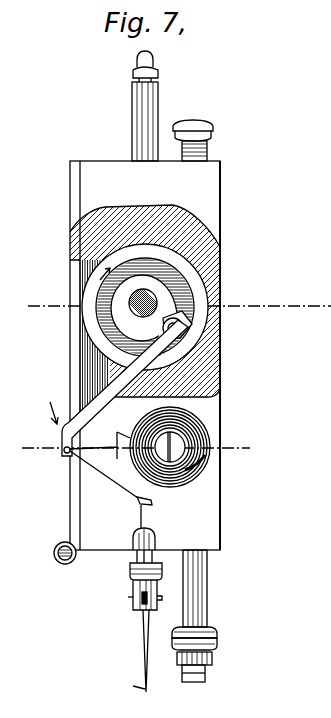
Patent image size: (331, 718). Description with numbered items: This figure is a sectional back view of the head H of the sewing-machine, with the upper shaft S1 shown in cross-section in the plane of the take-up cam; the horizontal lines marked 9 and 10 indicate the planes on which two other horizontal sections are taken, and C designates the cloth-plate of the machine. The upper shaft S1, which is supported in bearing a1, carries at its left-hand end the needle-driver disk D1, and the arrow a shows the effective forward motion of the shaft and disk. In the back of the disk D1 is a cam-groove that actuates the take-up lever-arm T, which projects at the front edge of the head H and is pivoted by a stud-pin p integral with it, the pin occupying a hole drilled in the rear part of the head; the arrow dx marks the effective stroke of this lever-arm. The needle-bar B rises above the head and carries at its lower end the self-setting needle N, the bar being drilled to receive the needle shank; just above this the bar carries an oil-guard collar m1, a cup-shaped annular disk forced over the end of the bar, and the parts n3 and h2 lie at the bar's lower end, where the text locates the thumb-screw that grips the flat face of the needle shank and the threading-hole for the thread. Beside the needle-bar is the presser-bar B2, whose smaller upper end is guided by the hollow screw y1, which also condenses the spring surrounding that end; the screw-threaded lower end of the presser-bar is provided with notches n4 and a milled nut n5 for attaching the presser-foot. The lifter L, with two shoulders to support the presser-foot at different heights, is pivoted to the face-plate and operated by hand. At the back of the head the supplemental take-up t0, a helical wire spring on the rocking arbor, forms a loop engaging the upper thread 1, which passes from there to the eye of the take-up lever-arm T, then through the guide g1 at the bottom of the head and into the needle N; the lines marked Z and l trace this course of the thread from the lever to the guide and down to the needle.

The section line 10 10 is at (48, 291).
The section line 9 9 is at (241, 456).
The head H is at (145, 355).
The needle-bar B is at (134, 106).
The hollow screw y1 is at (200, 140).
The needle-driver disk D1 is at (165, 309).
The cloth-plate C is at (143, 306).
The upper shaft S1 is at (143, 311).
The bearing a1 is at (98, 280).
The pin a is at (149, 346).
The stud-pin p is at (186, 320).
The take-up lever-arm T is at (114, 388).
The arrow dx is at (49, 404).
The link Z is at (104, 474).
The guide g1 is at (154, 506).
The supplemental take-up t0 is at (100, 439).
The upper thread 1 is at (201, 403).
The lifter L is at (57, 546).
The needle N is at (140, 610).
The needle l is at (134, 686).
The oil-guard collar m1 is at (130, 572).
The needle clamp n3 is at (119, 600).
The clamp screw h2 is at (162, 598).
The presser-bar B2 is at (204, 588).
The milled nut n5 is at (203, 640).
The notches n4 is at (201, 667).